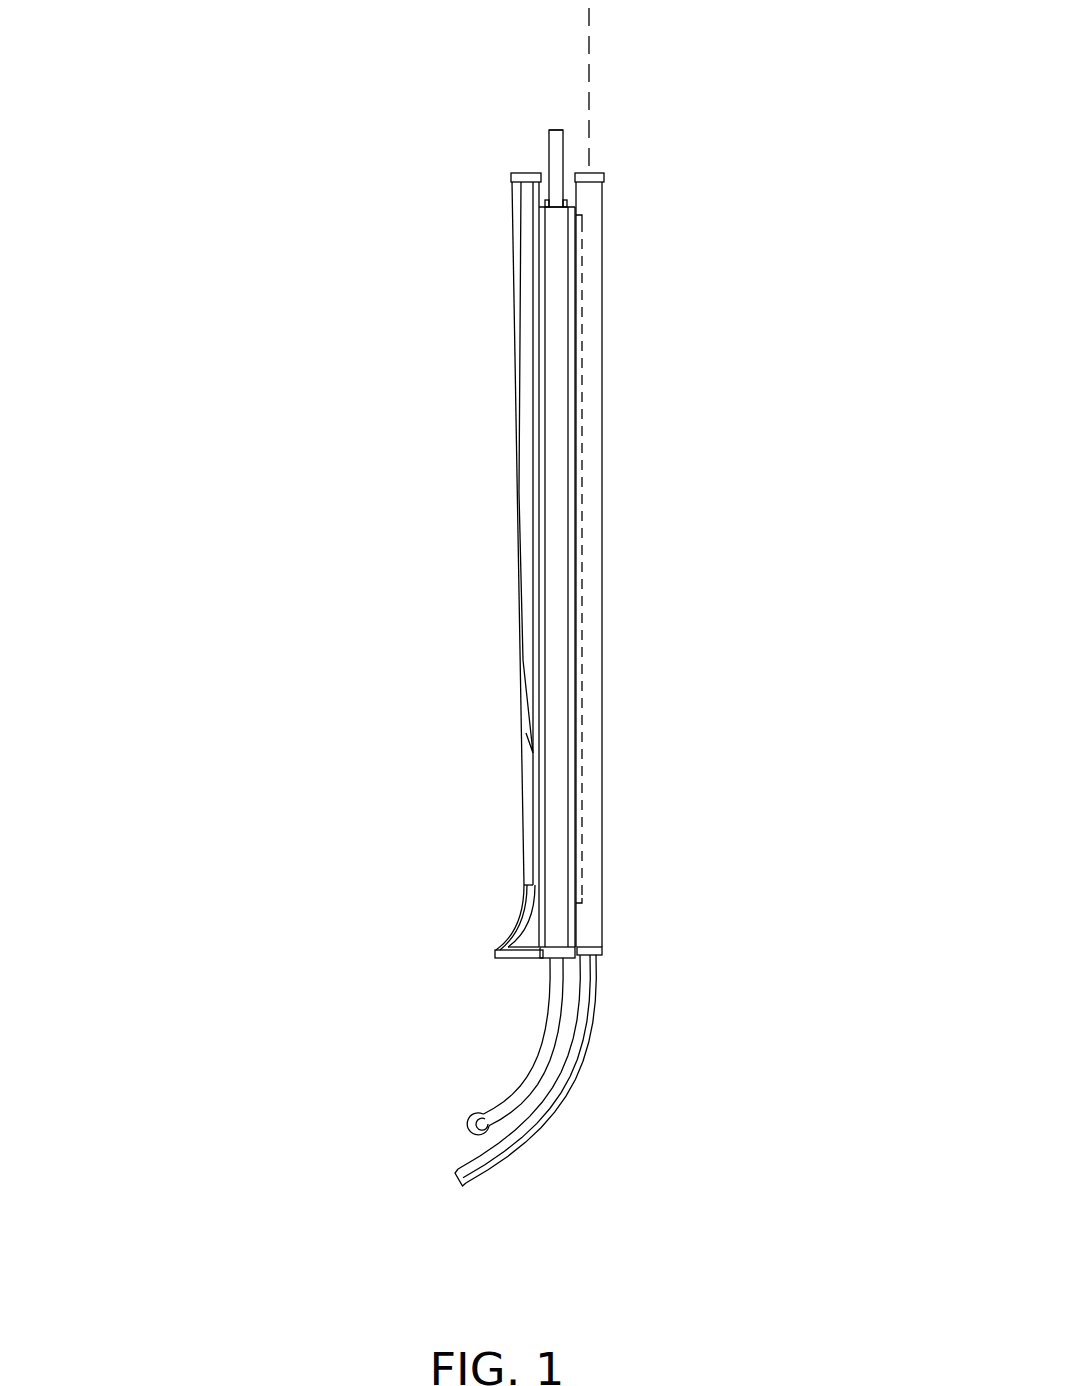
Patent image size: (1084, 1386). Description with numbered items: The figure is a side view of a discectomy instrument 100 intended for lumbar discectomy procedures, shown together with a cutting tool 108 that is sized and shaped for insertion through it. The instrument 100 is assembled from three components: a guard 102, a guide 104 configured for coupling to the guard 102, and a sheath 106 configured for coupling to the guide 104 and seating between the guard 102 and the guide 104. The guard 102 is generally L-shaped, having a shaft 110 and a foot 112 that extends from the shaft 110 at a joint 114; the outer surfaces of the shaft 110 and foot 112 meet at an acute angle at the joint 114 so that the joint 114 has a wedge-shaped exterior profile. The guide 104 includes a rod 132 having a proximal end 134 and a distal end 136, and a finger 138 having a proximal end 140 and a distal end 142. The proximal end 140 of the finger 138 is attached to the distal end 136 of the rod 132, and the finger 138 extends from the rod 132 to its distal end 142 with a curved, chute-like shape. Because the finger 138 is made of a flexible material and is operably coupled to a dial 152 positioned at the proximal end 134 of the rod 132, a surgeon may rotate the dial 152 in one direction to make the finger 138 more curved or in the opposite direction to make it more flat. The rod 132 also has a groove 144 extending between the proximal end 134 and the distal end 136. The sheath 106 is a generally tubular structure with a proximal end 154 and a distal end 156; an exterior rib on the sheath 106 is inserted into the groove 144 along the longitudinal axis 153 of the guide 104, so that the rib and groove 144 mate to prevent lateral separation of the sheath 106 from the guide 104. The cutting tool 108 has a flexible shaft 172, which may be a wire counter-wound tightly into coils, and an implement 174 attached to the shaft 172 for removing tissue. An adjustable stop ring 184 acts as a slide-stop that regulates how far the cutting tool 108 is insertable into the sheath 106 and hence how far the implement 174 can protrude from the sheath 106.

The discectomy instrument 100 is at (352, 228).
The guard 102 is at (428, 573).
The guide 104 is at (602, 691).
The sheath 106 is at (655, 582).
The cutting tool 108 is at (520, 134).
The shaft 110 is at (512, 290).
The foot 112 is at (518, 953).
The joint 114 is at (497, 943).
The rod 132 is at (604, 345).
The proximal end 134 is at (605, 204).
The distal end 136 is at (603, 935).
The finger 138 is at (602, 1109).
The proximal end 140 is at (600, 963).
The distal end 142 is at (468, 1186).
The groove 144 is at (584, 455).
The dial 152 is at (603, 172).
The longitudinal axis 153 is at (590, 60).
The proximal end 154 is at (558, 232).
The distal end 156 is at (558, 943).
The flexible shaft 172 is at (441, 1046).
The implement 174 is at (438, 1112).
The adjustable stop ring 184 is at (567, 198).